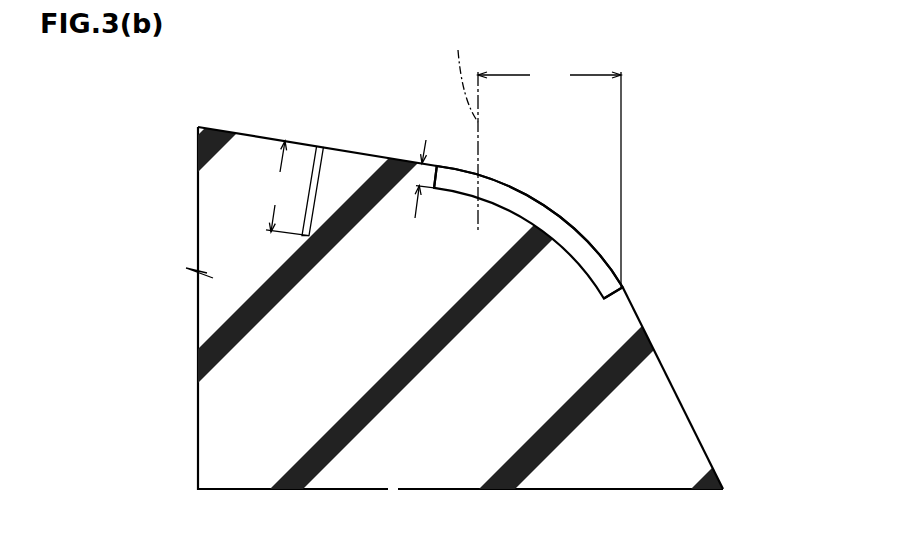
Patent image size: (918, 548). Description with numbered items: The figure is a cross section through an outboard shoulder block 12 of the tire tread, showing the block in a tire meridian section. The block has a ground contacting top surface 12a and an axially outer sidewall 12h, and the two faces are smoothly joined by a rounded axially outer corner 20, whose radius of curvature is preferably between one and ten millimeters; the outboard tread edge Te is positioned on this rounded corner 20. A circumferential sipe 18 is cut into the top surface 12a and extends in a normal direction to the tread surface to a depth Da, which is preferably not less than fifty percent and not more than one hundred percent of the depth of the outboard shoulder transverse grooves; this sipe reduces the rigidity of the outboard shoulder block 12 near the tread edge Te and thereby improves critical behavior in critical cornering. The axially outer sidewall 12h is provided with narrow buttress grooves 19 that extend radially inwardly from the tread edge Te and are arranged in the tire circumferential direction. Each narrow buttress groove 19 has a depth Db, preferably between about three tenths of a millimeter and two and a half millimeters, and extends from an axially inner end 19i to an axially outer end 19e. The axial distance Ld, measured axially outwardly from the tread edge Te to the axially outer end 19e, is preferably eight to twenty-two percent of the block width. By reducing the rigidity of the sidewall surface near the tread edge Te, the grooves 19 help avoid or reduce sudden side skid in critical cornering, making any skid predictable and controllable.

The outboard shoulder block 12 is at (233, 170).
The ground contacting top surface 12a is at (360, 152).
The axially outer sidewall 12h is at (678, 398).
The circumferential sipe 18 is at (318, 158).
The narrow buttress groove 19 is at (568, 238).
The axially inner end of the narrow buttress groove 19i is at (423, 160).
The axially outer end of the narrow buttress groove 19e is at (623, 287).
The axially outer corner 20 is at (531, 194).
The depth of the circumferential sipe Da is at (286, 188).
The depth of the narrow buttress grooves Db is at (409, 177).
The axial distance from the tread edge to the axially outer end of the narrow buttre Ld is at (549, 176).
The outboard tread edge Te is at (462, 75).